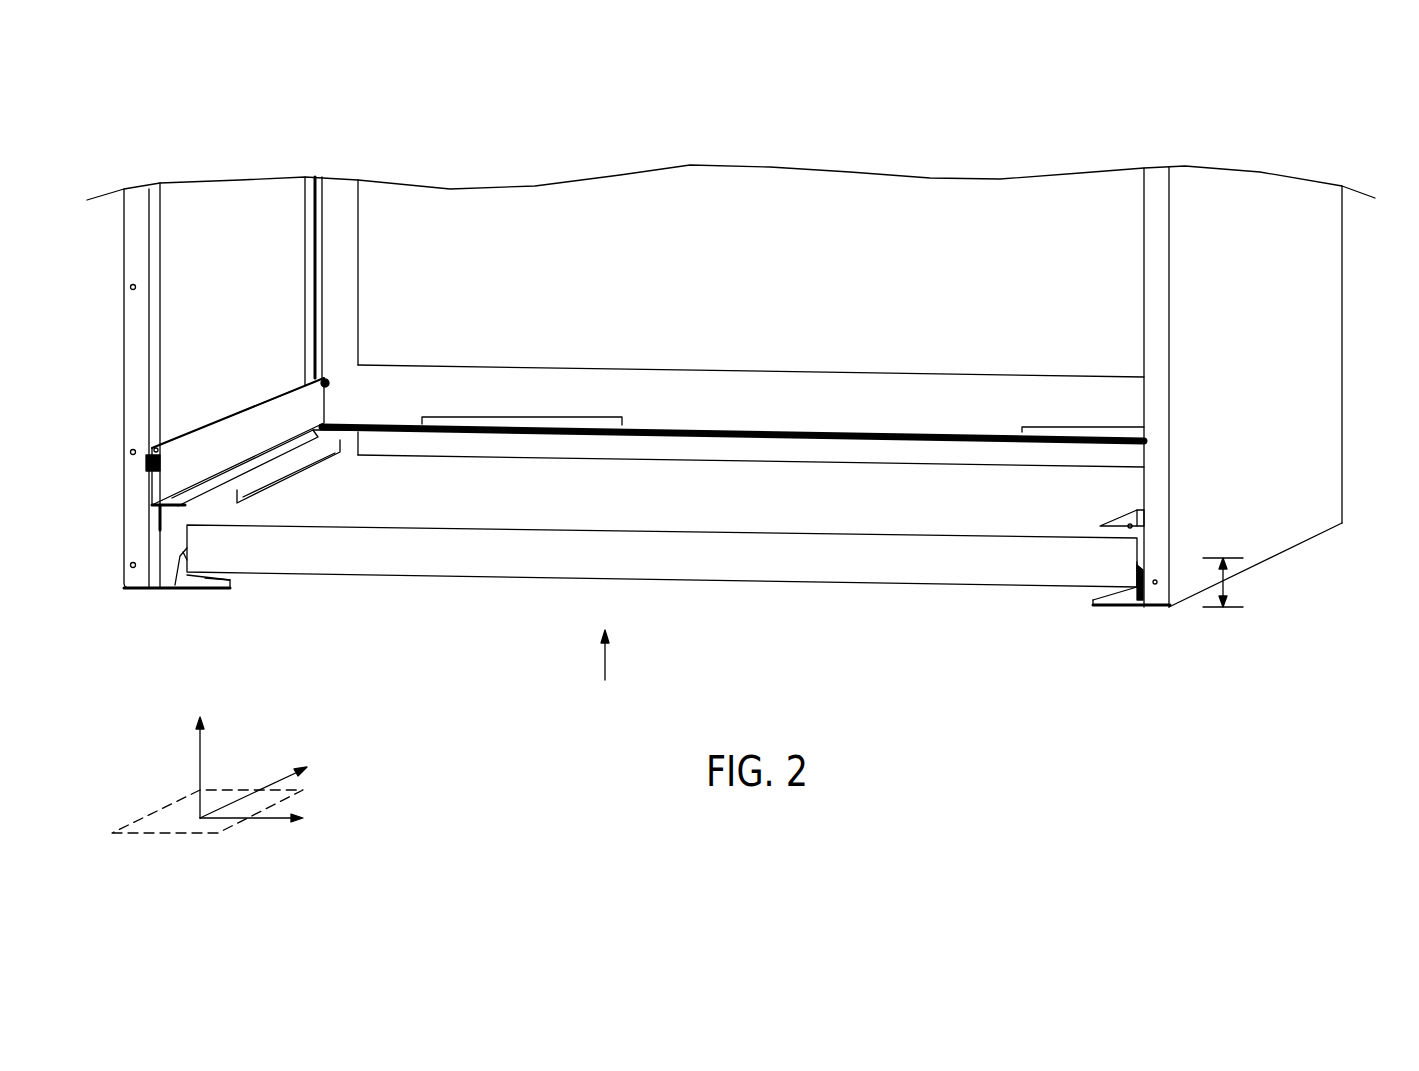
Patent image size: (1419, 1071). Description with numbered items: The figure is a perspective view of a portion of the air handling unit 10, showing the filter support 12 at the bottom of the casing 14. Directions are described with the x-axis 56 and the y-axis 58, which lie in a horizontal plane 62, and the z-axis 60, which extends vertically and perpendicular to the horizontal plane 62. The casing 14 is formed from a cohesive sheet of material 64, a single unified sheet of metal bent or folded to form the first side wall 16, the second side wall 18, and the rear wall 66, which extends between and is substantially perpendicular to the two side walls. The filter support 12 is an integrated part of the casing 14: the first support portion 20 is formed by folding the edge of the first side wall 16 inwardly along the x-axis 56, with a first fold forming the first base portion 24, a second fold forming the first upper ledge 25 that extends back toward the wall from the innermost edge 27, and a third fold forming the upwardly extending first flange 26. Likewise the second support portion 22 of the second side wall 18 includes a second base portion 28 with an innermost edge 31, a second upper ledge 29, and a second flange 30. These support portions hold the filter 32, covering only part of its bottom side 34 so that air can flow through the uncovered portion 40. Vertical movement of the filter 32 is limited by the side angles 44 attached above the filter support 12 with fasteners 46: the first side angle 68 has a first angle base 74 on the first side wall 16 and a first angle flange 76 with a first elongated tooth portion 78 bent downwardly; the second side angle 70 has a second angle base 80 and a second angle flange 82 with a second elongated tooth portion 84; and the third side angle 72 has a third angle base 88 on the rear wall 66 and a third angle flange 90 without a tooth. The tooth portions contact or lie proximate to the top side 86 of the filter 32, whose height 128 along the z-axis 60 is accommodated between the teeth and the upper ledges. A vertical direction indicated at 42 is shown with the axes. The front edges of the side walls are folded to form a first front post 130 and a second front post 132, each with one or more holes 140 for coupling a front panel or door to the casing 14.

The air handling unit 10 is at (352, 128).
The filter support 12 is at (148, 592).
The casing 14 is at (515, 210).
The first side wall 16 is at (166, 195).
The second side wall 18 is at (1268, 200).
The first support portion 20 is at (156, 601).
The second support portion 22 is at (1117, 623).
The first base portion 24 is at (185, 596).
The first upper ledge 25 is at (222, 582).
The first flange 26 is at (167, 578).
The innermost edge 27 is at (225, 596).
The second base portion 28 is at (1135, 610).
The second upper ledge 29 is at (1157, 584).
The second flange 30 is at (1143, 572).
The innermost edge 31 is at (1084, 607).
The filter 32 is at (492, 553).
The bottom side 34 is at (663, 582).
The uncovered portion 40 is at (350, 570).
The vertical direction 42 is at (605, 660).
The side angles 44 is at (160, 450).
The fasteners 46 is at (332, 387).
The x-axis 56 is at (262, 823).
The y-axis 58 is at (270, 783).
The z-axis 60 is at (200, 775).
The horizontal plane 62 is at (163, 836).
The cohesive sheet of material 64 is at (912, 207).
The rear wall 66 is at (750, 195).
The first side angle 68 is at (210, 446).
The second side angle 70 is at (1128, 512).
The third side angle 72 is at (690, 369).
The first angle base 74 is at (280, 388).
The first angle flange 76 is at (270, 470).
The first elongated tooth portion 78 is at (320, 462).
The second angle base 80 is at (1305, 422).
The second angle flange 82 is at (1100, 523).
The second elongated tooth portion 84 is at (1145, 535).
The top side 86 is at (668, 531).
The third angle base 88 is at (777, 390).
The third angle flange 90 is at (858, 434).
The height 128 is at (1237, 585).
The first front post 130 is at (137, 240).
The second front post 132 is at (1156, 190).
The holes 140 is at (133, 285).